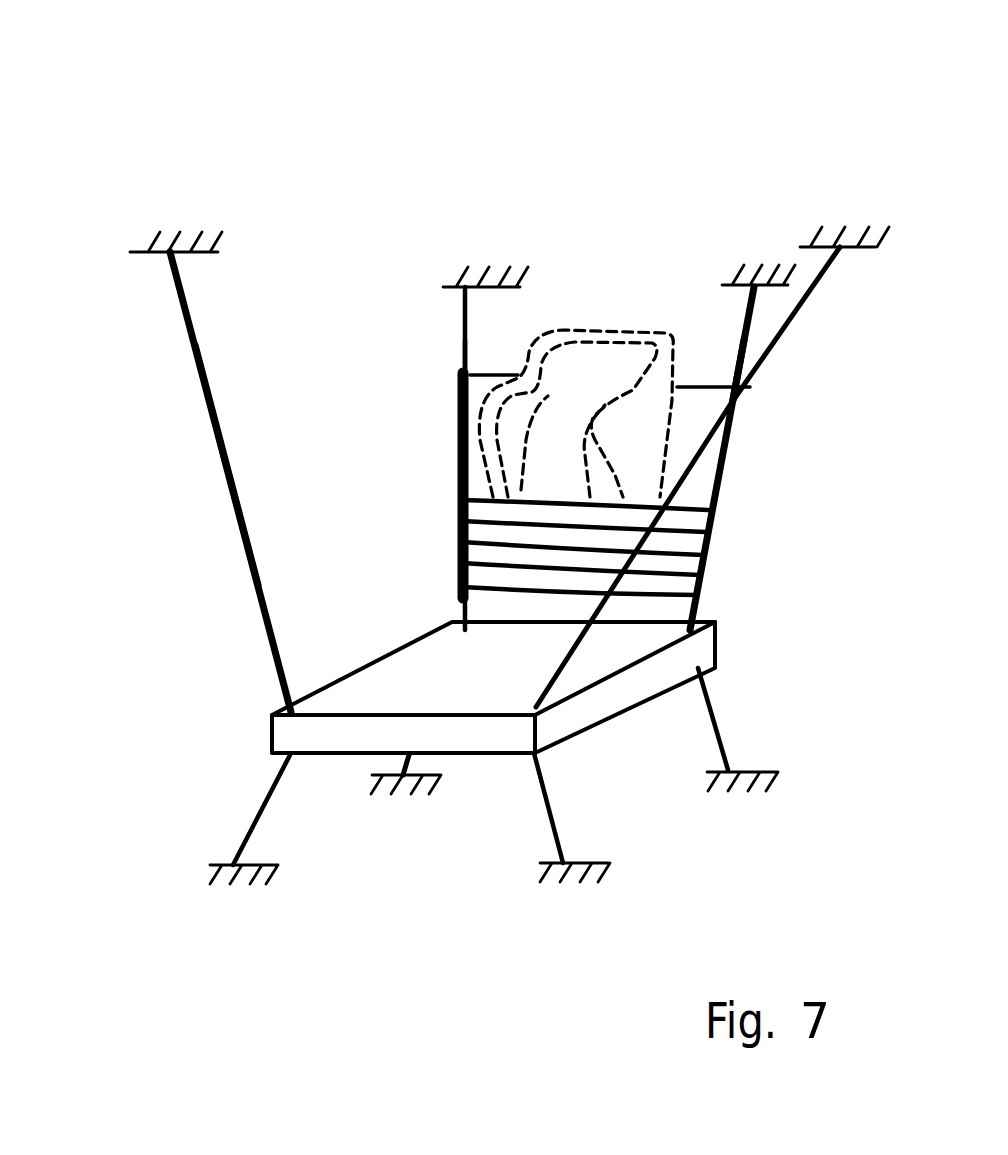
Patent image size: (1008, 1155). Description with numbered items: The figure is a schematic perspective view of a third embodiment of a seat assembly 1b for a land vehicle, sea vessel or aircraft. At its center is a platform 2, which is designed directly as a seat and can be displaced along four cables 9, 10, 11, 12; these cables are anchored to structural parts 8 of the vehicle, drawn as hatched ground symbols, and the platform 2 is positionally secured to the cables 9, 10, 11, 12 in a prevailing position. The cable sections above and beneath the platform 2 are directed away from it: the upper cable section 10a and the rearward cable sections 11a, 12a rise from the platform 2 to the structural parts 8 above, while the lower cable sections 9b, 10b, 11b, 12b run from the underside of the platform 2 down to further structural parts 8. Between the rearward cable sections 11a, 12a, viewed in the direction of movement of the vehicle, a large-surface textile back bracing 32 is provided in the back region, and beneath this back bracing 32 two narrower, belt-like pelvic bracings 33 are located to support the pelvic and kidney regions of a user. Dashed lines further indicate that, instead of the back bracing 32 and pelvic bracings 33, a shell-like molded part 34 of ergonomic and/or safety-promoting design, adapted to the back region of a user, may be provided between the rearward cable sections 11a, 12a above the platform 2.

The seat assembly 1b is at (641, 147).
The platform 2 is at (268, 715).
The structural parts 8 is at (178, 238).
The cable 9 is at (548, 661).
The cable section 9b is at (540, 805).
The cable 10 is at (209, 342).
The cable section 10a is at (232, 468).
The cable section 10b is at (267, 798).
The cable 11 is at (458, 322).
The rearward cable section 11a is at (460, 348).
The cable section 11b is at (392, 760).
The cable 12 is at (762, 319).
The rearward cable section 12a is at (750, 345).
The cable section 12b is at (715, 698).
The back bracing 32 is at (700, 403).
The pelvic bracings 33 is at (715, 550).
The shell-like molded part 34 is at (588, 367).